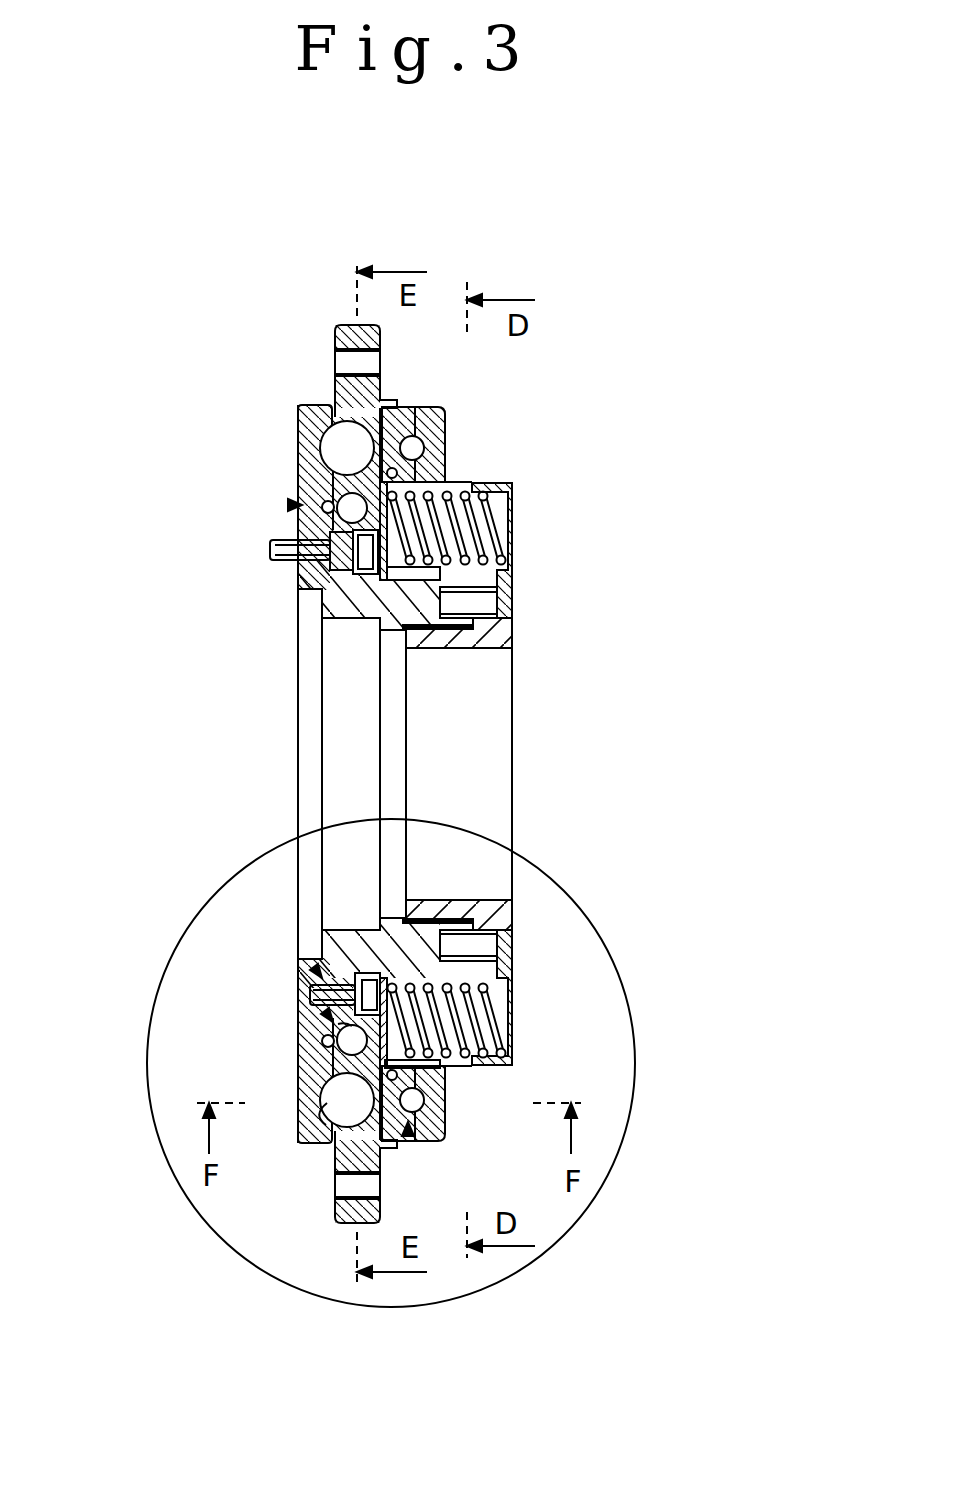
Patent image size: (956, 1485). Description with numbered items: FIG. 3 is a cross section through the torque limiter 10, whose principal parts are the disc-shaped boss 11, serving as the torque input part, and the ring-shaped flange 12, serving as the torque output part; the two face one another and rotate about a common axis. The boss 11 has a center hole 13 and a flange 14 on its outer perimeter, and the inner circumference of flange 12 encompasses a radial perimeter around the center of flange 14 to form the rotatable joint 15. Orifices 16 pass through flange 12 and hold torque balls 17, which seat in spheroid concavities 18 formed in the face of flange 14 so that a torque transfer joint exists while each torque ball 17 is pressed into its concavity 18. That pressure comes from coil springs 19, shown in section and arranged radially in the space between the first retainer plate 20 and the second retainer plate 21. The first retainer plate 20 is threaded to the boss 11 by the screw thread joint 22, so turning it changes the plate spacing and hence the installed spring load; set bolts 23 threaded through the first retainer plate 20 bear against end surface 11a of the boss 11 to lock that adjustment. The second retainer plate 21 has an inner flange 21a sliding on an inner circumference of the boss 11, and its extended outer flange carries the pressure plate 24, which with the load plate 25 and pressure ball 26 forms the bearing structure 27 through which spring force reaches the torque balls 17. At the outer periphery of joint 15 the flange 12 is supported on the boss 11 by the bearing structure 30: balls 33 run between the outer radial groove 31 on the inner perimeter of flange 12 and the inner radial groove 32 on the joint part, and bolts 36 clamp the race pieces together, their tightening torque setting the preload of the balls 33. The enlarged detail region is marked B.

The torque limiter 10 is at (545, 480).
The boss 11 is at (345, 584).
The end surface 11a is at (470, 628).
The flange 12 is at (338, 340).
The center hole 13 is at (388, 636).
The flange 14 is at (314, 405).
The rotatable joint 15 is at (310, 993).
The orifice 16 is at (392, 408).
The torque ball 17 is at (335, 452).
The spheroid concavity 18 is at (336, 500).
The spring 19 is at (490, 515).
The first retainer plate 20 is at (515, 545).
The second retainer plate 21 is at (405, 515).
The inner flange 21a is at (400, 584).
The screw thread joint 22 is at (472, 648).
The set bolt 23 is at (490, 603).
The pressure plate 24 is at (408, 1136).
The load plate 25 is at (442, 1137).
The pressure ball 26 is at (440, 1080).
The bearing structure 27 is at (444, 1105).
The bearing structure 30 is at (288, 505).
The outer radial groove 31 is at (338, 1036).
The inner radial groove 32 is at (342, 1028).
The ball 33 is at (387, 1022).
The bolt 36 is at (315, 968).
The detail circle B is at (636, 1048).